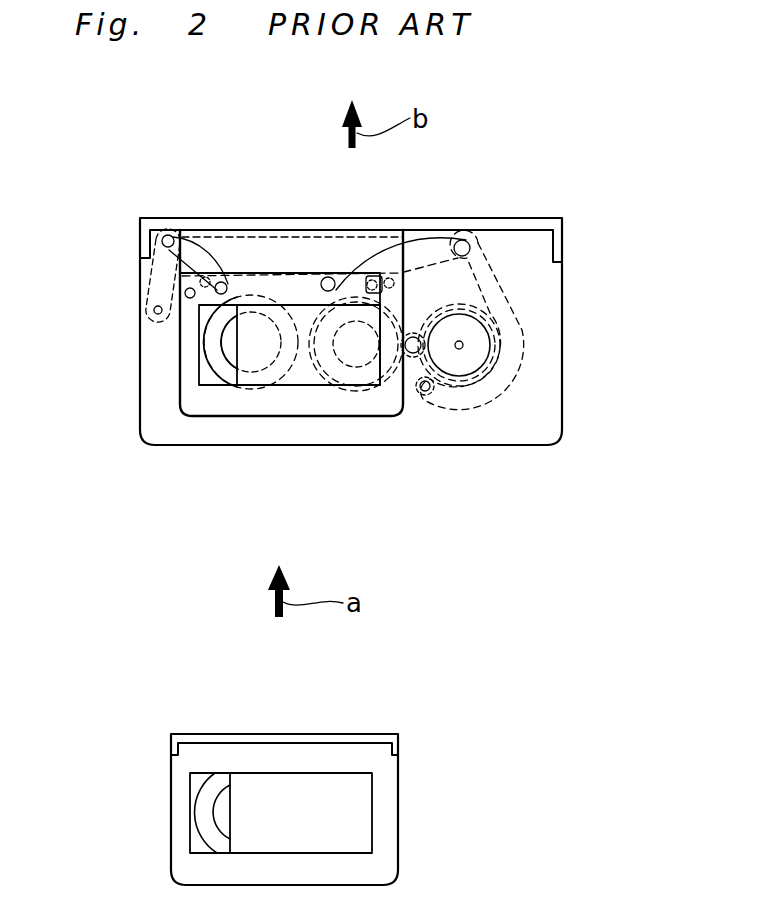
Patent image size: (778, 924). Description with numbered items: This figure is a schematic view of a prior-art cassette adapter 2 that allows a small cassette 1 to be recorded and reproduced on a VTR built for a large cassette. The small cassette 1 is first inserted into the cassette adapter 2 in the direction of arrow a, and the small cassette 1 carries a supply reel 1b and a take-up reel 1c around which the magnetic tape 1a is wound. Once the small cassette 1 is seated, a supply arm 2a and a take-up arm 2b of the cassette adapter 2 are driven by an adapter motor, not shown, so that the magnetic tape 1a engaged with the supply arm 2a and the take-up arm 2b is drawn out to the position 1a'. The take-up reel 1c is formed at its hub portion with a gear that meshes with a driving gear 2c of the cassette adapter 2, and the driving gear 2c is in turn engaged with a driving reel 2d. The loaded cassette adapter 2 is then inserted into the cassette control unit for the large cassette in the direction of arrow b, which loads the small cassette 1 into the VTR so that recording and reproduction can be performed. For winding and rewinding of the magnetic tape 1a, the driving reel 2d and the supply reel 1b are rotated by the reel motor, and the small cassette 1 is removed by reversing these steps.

The small cassette 1 is at (187, 402).
The magnetic tape 1a is at (317, 222).
The drawn position of magnetic tape 1a' is at (268, 190).
The supply reel 1b is at (272, 372).
The take-up reel 1c is at (358, 372).
The cassette adapter 2 is at (153, 348).
The supply arm 2a is at (153, 273).
The take-up arm 2b is at (512, 338).
The driving gear 2c is at (413, 353).
The driving reel 2d is at (470, 358).